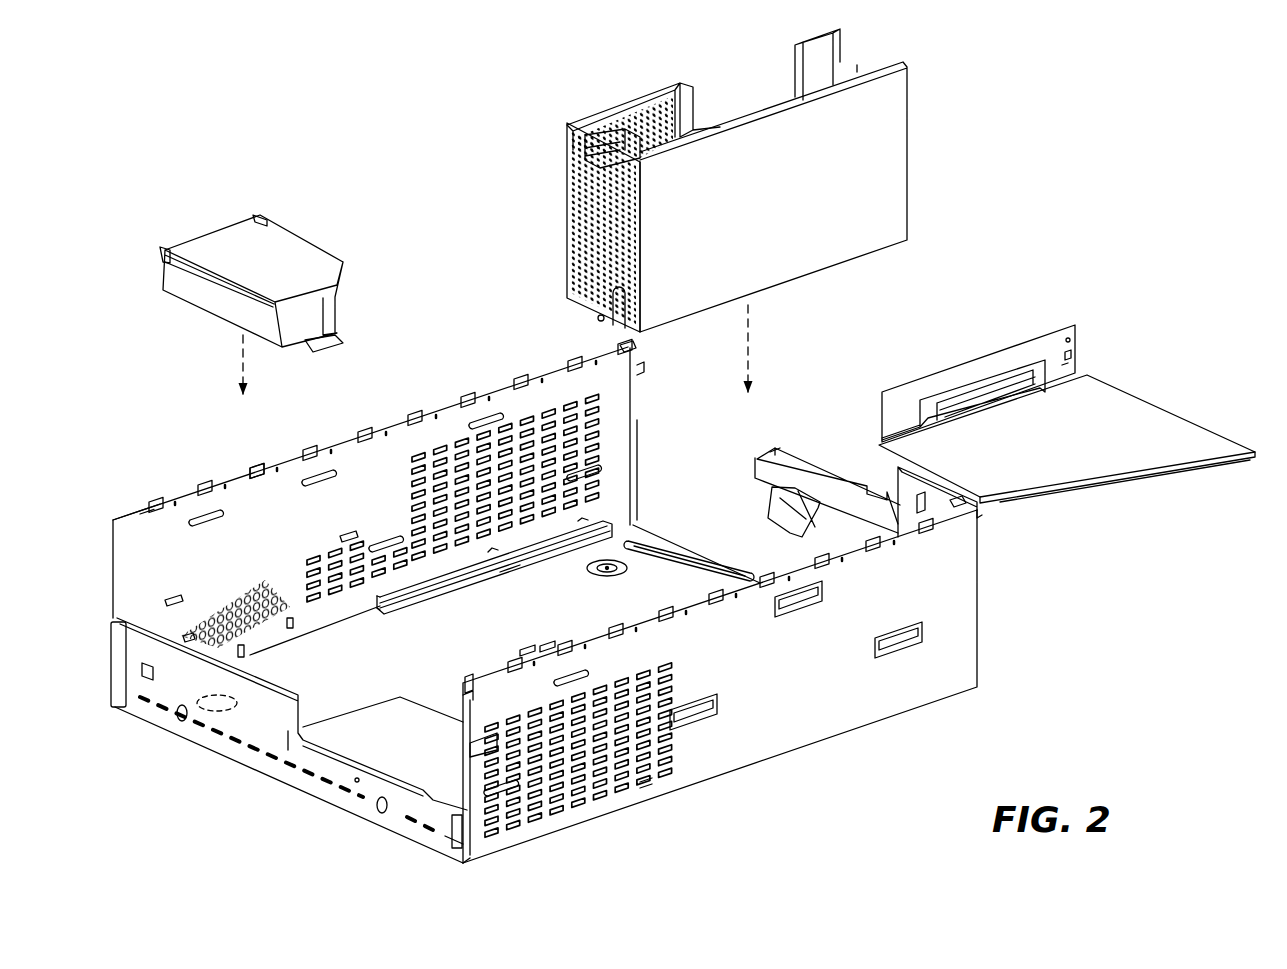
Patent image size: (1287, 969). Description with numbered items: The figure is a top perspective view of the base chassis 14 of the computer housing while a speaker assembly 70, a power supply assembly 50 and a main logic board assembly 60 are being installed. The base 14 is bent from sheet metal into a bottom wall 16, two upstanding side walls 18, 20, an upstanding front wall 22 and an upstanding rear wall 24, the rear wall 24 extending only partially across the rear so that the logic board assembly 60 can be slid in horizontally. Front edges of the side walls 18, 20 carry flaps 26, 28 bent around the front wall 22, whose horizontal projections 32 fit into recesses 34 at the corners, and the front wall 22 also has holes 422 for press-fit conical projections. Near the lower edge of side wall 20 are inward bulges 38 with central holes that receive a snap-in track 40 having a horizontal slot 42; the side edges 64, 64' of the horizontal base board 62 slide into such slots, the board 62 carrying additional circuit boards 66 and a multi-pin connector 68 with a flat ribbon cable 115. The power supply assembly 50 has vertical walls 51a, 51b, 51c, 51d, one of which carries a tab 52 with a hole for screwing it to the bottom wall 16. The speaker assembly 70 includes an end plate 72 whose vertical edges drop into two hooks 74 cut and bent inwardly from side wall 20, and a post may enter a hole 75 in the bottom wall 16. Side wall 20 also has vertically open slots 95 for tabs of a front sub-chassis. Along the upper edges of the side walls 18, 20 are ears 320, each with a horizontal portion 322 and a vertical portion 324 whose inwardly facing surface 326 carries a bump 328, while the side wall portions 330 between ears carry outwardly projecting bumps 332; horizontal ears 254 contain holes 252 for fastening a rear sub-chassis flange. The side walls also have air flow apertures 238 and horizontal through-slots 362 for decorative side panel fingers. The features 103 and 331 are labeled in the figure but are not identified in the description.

The base chassis 14 is at (553, 608).
The bottom wall 16 is at (388, 691).
The side wall 18 is at (720, 694).
The side wall 20 is at (622, 412).
The front wall 22 is at (259, 753).
The rear wall 24 is at (912, 488).
The flap 26 is at (450, 841).
The flap 28 is at (112, 681).
The horizontal projection 32 is at (470, 861).
The recess 34 is at (456, 862).
The semi-spherical inward bulge 38 is at (378, 597).
The snap-in track 40 is at (511, 540).
The horizontal slot 42 is at (510, 578).
The power supply assembly 50 is at (738, 205).
The vertical wall 51a is at (898, 162).
The vertical wall 51b is at (565, 247).
The vertical wall 51c is at (650, 103).
The vertical wall 51d is at (868, 41).
The tab 52 is at (598, 318).
The main logic board assembly 60 is at (1067, 434).
The horizontal base board 62 is at (1090, 499).
The side edge 64 is at (803, 450).
The side edge 64' is at (1125, 518).
The additional circuit board 66 is at (1033, 334).
The multi-pin connector 68 is at (779, 444).
The speaker assembly 70 is at (262, 296).
The end plate 72 is at (260, 216).
The hook 74 is at (185, 640).
The hole 75 is at (205, 741).
The vertically open slot 95 is at (346, 538).
The clip 103 is at (760, 463).
The flat cable 115 is at (744, 509).
The air flow aperture 238 is at (653, 781).
The hole 252 is at (632, 347).
The horizontal ear 254 is at (640, 366).
The ear 320 is at (363, 433).
The horizontal portion 322 is at (150, 531).
The vertical portion 324 is at (157, 506).
The inwardly facing surface 326 is at (312, 457).
The bump 328 is at (256, 468).
The side wall portion 330 is at (505, 385).
The floor edge 331 is at (458, 705).
The outwardly projecting bump 332 is at (463, 696).
The horizontal through-slot 362 is at (203, 503).
The hole 422 is at (178, 718).